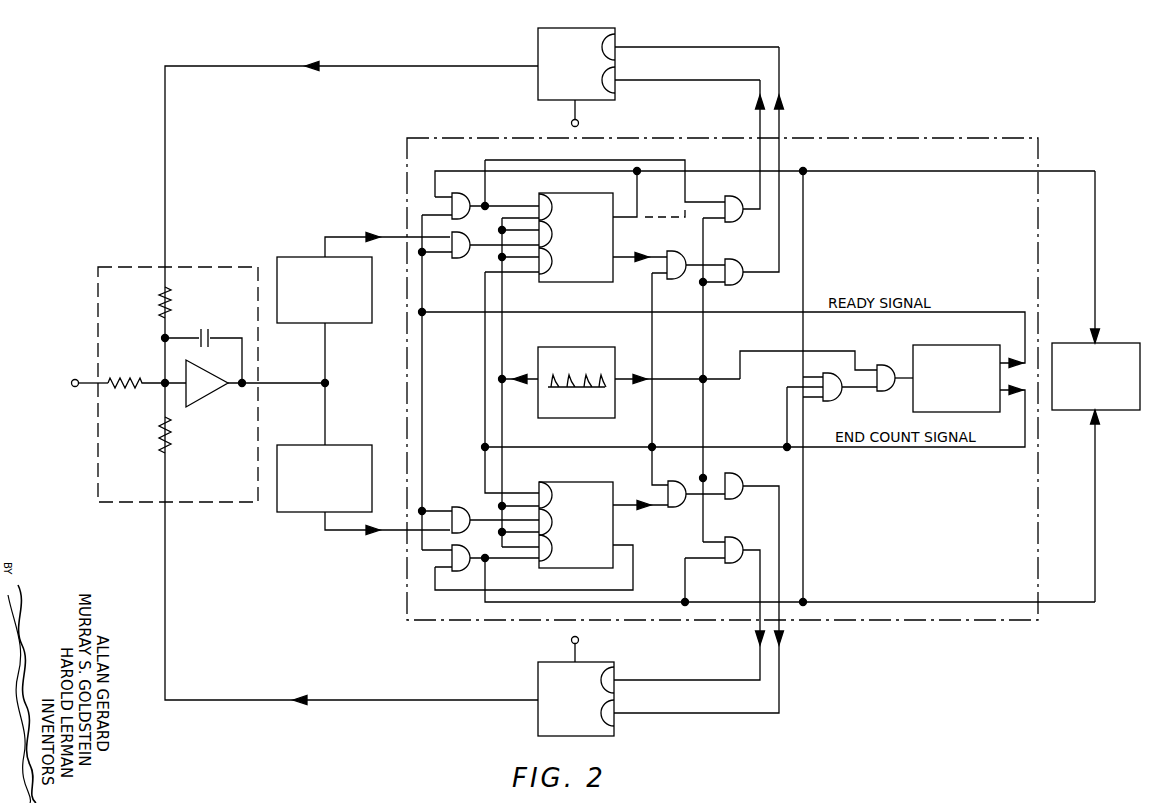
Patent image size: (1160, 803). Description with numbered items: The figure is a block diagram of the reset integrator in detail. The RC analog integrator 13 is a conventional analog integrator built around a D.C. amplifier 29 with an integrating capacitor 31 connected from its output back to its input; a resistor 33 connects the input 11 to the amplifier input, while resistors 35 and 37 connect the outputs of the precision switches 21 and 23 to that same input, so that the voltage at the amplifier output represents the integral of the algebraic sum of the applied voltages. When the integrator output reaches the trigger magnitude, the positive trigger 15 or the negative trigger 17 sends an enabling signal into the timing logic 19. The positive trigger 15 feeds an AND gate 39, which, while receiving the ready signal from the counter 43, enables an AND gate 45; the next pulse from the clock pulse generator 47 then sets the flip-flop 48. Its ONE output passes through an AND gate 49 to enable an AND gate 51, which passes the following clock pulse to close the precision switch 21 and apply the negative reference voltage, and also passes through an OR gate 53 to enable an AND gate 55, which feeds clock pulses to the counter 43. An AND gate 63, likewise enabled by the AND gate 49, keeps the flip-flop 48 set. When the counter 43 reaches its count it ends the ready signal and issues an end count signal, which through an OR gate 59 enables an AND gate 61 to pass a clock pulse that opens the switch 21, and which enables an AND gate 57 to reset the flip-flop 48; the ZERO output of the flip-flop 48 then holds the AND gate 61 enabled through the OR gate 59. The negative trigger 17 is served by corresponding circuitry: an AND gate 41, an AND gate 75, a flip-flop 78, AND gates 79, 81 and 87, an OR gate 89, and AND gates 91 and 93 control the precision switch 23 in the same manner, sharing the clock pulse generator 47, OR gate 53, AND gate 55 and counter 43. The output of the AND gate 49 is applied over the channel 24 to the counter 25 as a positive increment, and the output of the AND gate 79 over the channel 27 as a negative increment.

The input 11 is at (85, 388).
The RC analog integrator 13 is at (96, 282).
The positive trigger 15 is at (352, 317).
The negative trigger 17 is at (348, 450).
The timing logic 19 is at (405, 592).
The precision switch 21 is at (545, 79).
The precision switch 23 is at (543, 716).
The channel 24 is at (1097, 225).
The counter 25 is at (1105, 345).
The channel 27 is at (1097, 500).
The D.C. amplifier 29 is at (198, 403).
The integrating capacitor 31 is at (203, 325).
The resistor 33 is at (135, 378).
The resistor 35 is at (162, 302).
The resistor 37 is at (162, 445).
The AND gate 39 is at (468, 257).
The AND gate 41 is at (463, 503).
The counter 43 is at (952, 350).
The AND gate 45 is at (553, 236).
The clock pulse generator 47 is at (585, 413).
The flip-flop 48 is at (605, 276).
The AND gate 49 is at (465, 213).
The AND gate 51 is at (735, 215).
The OR gate 53 is at (827, 402).
The AND gate 55 is at (883, 362).
The AND gate 57 is at (544, 276).
The OR gate 59 is at (670, 277).
The AND gate 61 is at (733, 278).
The AND gate 63 is at (548, 202).
The AND gate 75 is at (548, 528).
The flip-flop 78 is at (578, 483).
The AND gate 79 is at (467, 538).
The AND gate 81 is at (737, 537).
The AND gate 87 is at (553, 483).
The OR gate 89 is at (669, 520).
The AND gate 91 is at (737, 473).
The AND gate 93 is at (543, 561).